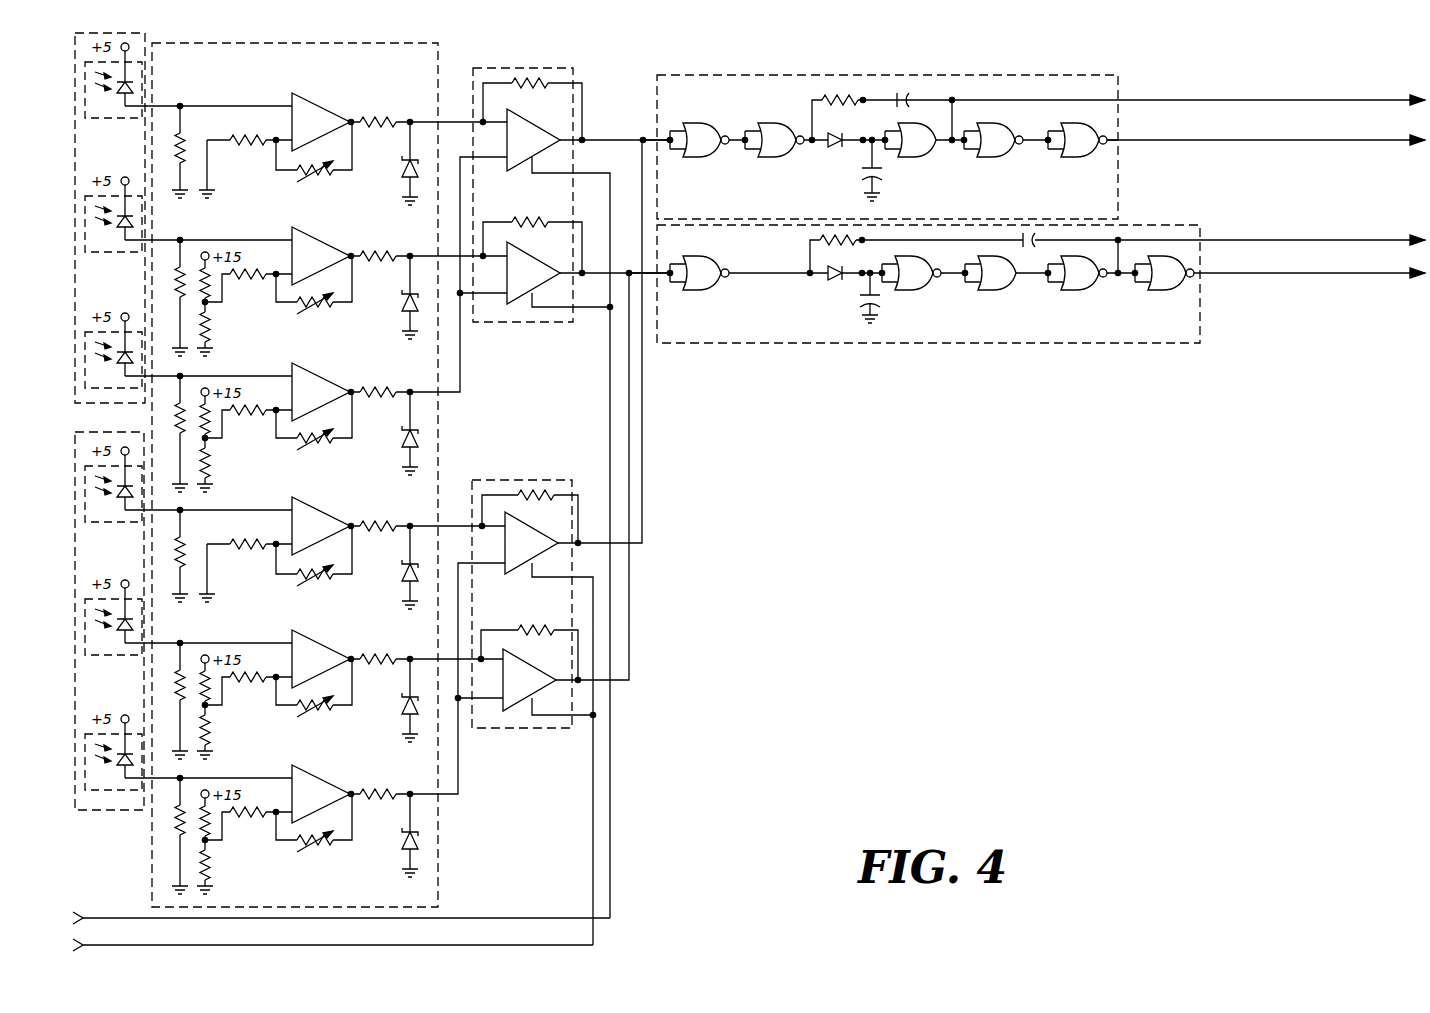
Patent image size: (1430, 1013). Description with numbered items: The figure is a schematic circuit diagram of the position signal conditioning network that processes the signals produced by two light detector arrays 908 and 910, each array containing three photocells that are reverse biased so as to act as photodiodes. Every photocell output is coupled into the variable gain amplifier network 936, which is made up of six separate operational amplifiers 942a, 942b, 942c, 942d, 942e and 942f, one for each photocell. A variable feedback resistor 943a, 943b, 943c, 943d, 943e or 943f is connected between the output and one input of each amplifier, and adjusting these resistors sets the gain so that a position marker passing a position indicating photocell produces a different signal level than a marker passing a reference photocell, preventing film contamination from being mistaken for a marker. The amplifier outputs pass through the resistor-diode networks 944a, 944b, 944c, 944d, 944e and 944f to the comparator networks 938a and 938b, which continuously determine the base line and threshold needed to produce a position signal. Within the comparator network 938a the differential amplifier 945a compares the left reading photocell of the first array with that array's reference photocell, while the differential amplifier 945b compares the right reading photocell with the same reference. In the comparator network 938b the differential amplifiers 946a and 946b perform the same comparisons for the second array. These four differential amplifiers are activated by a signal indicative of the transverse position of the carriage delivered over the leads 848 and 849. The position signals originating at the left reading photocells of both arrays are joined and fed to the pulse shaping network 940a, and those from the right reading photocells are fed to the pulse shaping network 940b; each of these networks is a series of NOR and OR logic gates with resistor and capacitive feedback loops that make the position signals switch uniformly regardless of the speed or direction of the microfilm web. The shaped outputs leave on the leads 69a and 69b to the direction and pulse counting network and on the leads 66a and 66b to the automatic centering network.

The light detector array 908 is at (128, 294).
The light detector array 910 is at (125, 563).
The variable gain amplifier network 936 is at (438, 864).
The comparator network 938a is at (573, 68).
The comparator network 938b is at (545, 477).
The pulse shaping network 940a is at (1122, 83).
The pulse shaping network 940b is at (1200, 322).
The variable gain amplifier 942a is at (319, 106).
The variable gain amplifier 942b is at (319, 240).
The variable gain amplifier 942c is at (319, 376).
The variable gain amplifier 942d is at (319, 510).
The variable gain amplifier 942e is at (319, 643).
The variable gain amplifier 942f is at (325, 769).
The variable feedback resistor 943a is at (301, 183).
The variable feedback resistor 943b is at (301, 315).
The variable feedback resistor 943c is at (301, 451).
The variable feedback resistor 943d is at (301, 587).
The variable feedback resistor 943e is at (301, 718).
The variable feedback resistor 943f is at (301, 853).
The resistor-diode network 944a is at (385, 127).
The resistor-diode network 944b is at (385, 261).
The resistor-diode network 944c is at (385, 397).
The resistor-diode network 944d is at (385, 531).
The resistor-diode network 944e is at (385, 664).
The resistor-diode network 944f is at (385, 799).
The differential amplifier 945a is at (548, 115).
The differential amplifier 945b is at (548, 254).
The differential amplifier 946a is at (545, 524).
The differential amplifier 946b is at (537, 667).
The lead 66a is at (1355, 97).
The lead 69a is at (1373, 136).
The lead 66b is at (1375, 229).
The lead 69b is at (1309, 289).
The lead 848 is at (105, 909).
The lead 849 is at (110, 943).